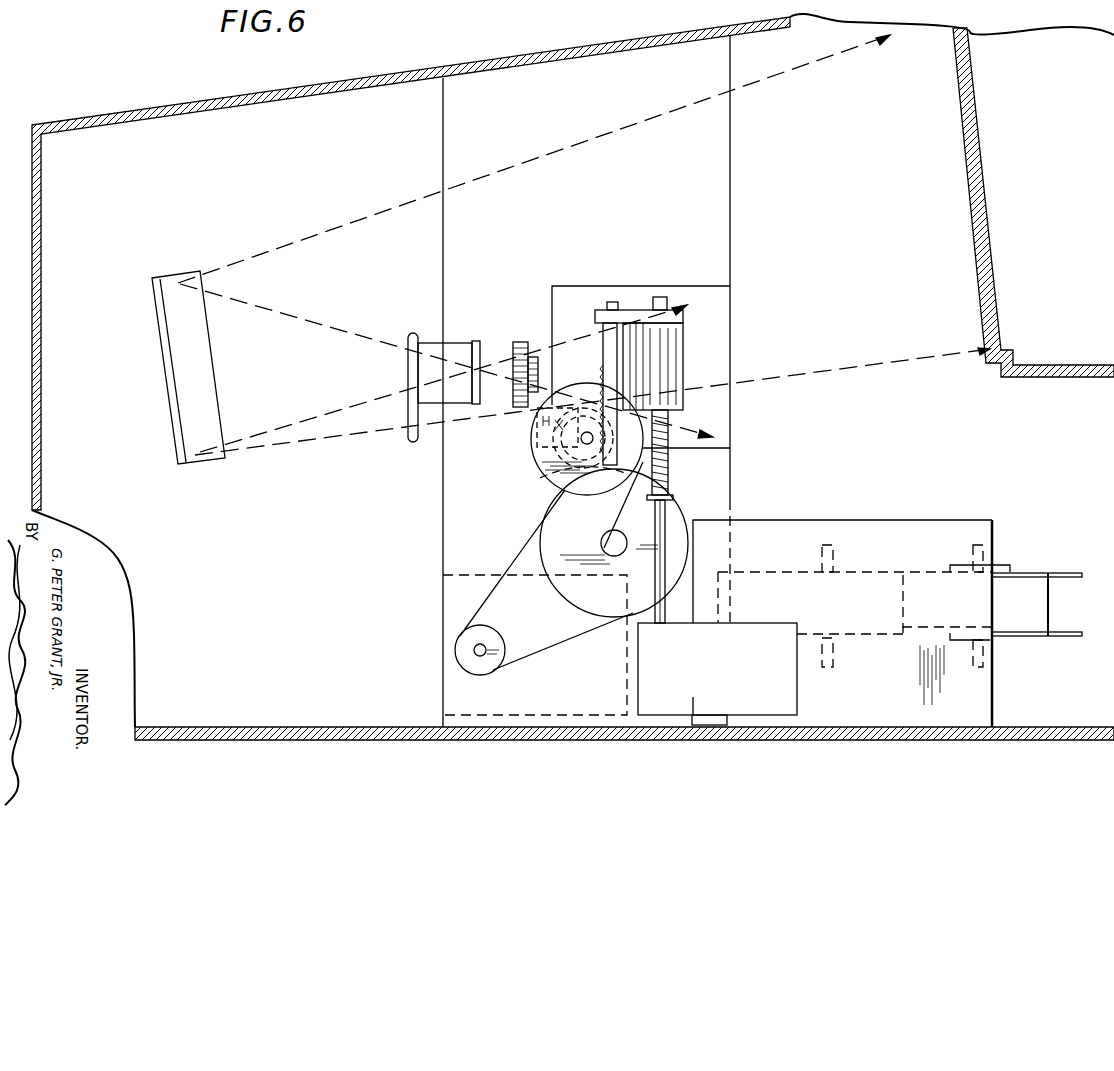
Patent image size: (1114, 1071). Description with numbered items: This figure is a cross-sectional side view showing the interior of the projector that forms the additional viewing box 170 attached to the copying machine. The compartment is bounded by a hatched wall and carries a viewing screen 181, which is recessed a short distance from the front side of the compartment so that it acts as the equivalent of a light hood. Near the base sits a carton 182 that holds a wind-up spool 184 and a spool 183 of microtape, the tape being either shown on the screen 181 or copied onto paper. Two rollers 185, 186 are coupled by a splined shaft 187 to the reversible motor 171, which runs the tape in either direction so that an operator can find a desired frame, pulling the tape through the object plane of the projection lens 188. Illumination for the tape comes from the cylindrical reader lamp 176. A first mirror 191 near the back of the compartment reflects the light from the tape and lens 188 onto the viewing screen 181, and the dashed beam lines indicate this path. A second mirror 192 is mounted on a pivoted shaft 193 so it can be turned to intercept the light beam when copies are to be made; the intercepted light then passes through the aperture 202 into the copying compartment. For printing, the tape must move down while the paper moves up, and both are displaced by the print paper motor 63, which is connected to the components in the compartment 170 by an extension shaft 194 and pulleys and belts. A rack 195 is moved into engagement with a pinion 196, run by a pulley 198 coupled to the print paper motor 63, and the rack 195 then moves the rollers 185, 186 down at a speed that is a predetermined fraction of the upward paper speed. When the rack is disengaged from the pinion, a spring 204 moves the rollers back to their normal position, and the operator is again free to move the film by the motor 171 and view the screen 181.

The viewing box 170 is at (200, 104).
The viewing screen 181 is at (992, 213).
The aperture 202 is at (752, 407).
The first mirror 191 is at (178, 418).
The spring 204 is at (448, 361).
The pivoted shaft 193 is at (409, 432).
The second mirror 192 is at (452, 345).
The projection lens 188 is at (519, 342).
The roller 185 is at (623, 325).
The rack 195 is at (608, 338).
The roller 186 is at (677, 348).
The splined shaft 187 is at (670, 470).
The pulley 198 is at (556, 478).
The pinion 196 is at (541, 468).
The reader lamp 176 is at (545, 447).
The extension shaft 194 is at (462, 638).
The print paper motor 63 is at (443, 697).
The reversible motor 171 is at (800, 690).
The carton 182 is at (963, 499).
The wind-up spool 184 is at (787, 570).
The spool 183 is at (1045, 573).